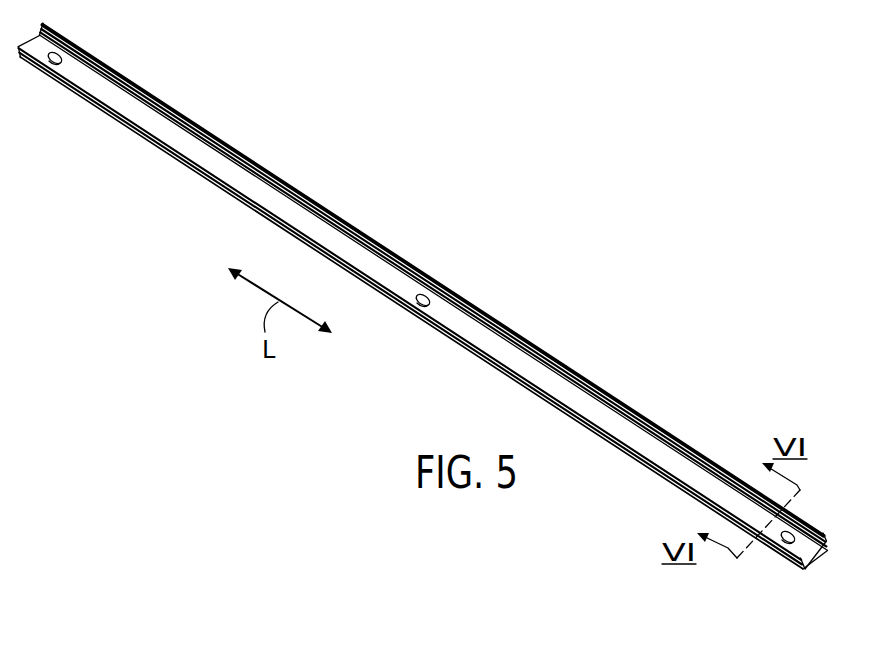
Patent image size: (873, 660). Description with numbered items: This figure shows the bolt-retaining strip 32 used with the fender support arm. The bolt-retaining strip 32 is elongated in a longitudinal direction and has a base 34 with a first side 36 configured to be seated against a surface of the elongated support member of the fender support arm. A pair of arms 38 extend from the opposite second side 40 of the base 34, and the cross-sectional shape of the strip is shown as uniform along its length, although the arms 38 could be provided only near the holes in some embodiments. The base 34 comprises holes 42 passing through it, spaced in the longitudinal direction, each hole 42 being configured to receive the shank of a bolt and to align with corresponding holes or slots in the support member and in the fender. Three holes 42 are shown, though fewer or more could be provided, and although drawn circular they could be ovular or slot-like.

The bolt-retaining strip 32 is at (436, 326).
The base 34 is at (670, 460).
The first side 36 is at (816, 556).
The arms 38 is at (142, 90).
The second side 40 is at (422, 303).
The hole 42 is at (66, 65).